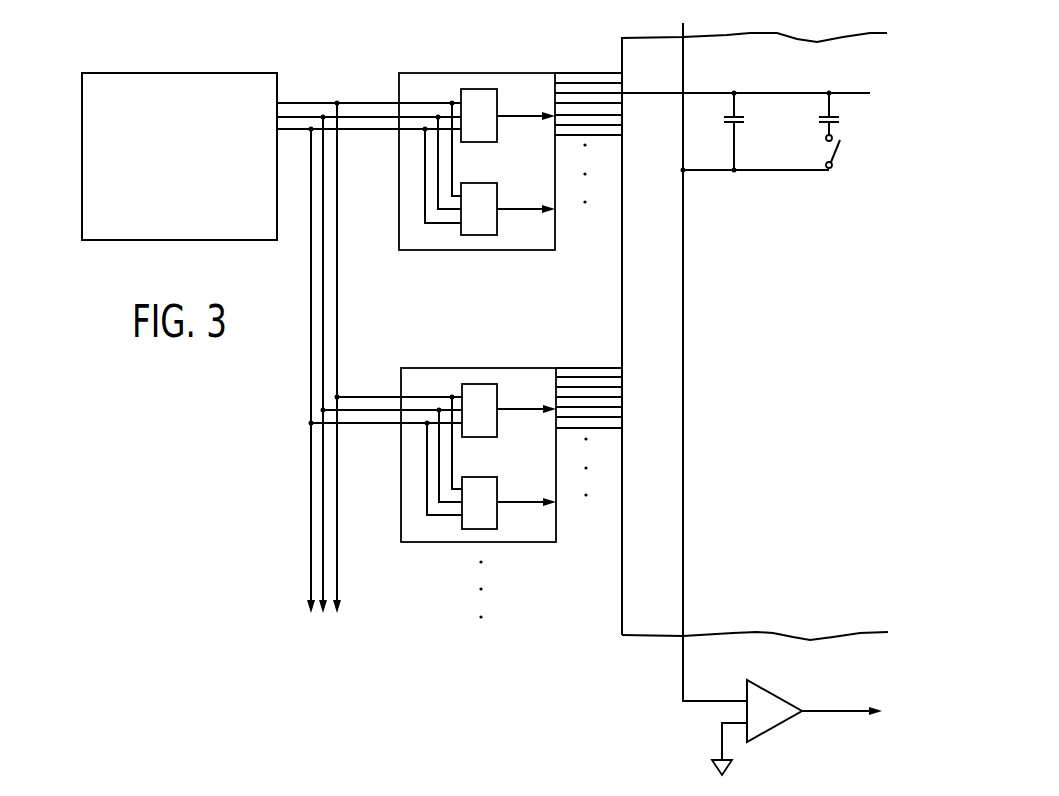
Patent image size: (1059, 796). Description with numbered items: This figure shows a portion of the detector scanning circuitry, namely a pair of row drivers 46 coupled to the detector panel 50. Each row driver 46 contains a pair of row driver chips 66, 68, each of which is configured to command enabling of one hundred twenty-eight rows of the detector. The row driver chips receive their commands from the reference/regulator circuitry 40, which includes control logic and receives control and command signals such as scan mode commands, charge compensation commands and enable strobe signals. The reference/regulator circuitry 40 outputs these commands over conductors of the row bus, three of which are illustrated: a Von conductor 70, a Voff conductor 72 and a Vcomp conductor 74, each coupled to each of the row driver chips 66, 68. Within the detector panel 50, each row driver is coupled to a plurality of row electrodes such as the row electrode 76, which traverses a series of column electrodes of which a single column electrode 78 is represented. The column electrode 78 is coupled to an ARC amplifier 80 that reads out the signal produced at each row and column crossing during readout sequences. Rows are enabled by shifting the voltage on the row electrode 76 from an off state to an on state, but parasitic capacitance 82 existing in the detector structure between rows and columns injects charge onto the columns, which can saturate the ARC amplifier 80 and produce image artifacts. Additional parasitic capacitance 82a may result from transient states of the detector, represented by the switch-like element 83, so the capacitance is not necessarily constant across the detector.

The reference/regulator circuitry 40 is at (135, 73).
The row driver 46 is at (435, 73).
The detector panel 50 is at (794, 340).
The row driver chip 66 is at (480, 89).
The row driver chip 68 is at (479, 235).
The Von conductor 70 is at (297, 103).
The Voff conductor 72 is at (303, 115).
The Vcomp conductor 74 is at (292, 132).
The row electrode 76 is at (757, 93).
The column electrode 78 is at (683, 300).
The ARC amplifier 80 is at (786, 742).
The parasitic capacitance 82 is at (745, 118).
The parasitic capacitance 82a is at (840, 113).
The transient state 83 is at (840, 153).